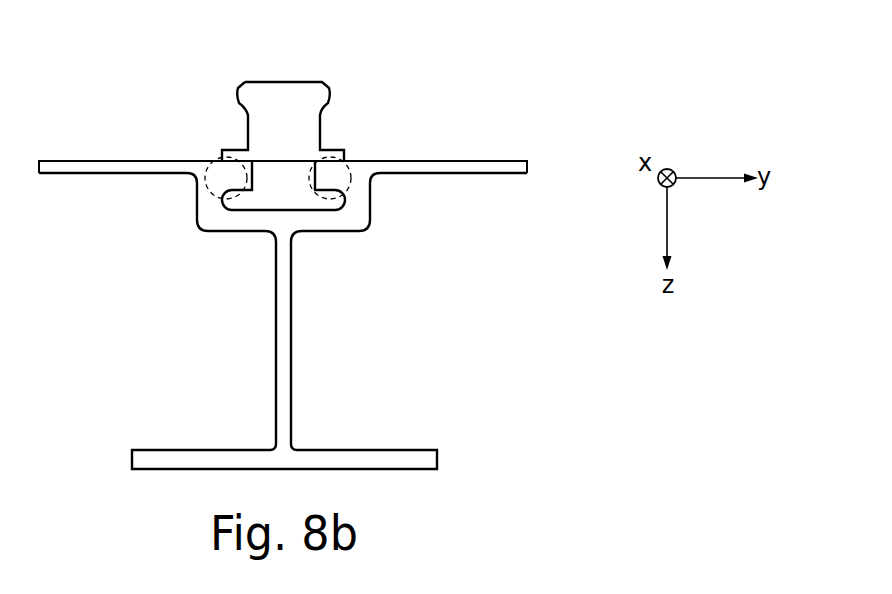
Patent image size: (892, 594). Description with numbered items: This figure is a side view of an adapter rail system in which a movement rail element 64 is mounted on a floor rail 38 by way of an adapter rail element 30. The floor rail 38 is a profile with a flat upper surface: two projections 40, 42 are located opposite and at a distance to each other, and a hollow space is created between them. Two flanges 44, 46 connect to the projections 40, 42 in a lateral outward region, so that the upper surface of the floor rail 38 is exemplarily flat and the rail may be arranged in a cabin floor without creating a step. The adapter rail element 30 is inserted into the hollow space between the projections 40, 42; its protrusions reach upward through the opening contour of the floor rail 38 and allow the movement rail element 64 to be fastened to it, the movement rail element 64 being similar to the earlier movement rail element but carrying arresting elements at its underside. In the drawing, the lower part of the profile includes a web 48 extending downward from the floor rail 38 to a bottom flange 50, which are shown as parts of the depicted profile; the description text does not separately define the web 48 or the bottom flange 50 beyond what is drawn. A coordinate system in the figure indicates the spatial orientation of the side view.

The adapter rail element 30 is at (272, 193).
The floor rail 38 is at (283, 321).
The projection 40 is at (215, 158).
The projection 42 is at (337, 148).
The flange 44 is at (77, 164).
The flange 46 is at (485, 165).
The web 48 is at (288, 327).
The bottom flange 50 is at (400, 455).
The movement rail element 64 is at (285, 88).